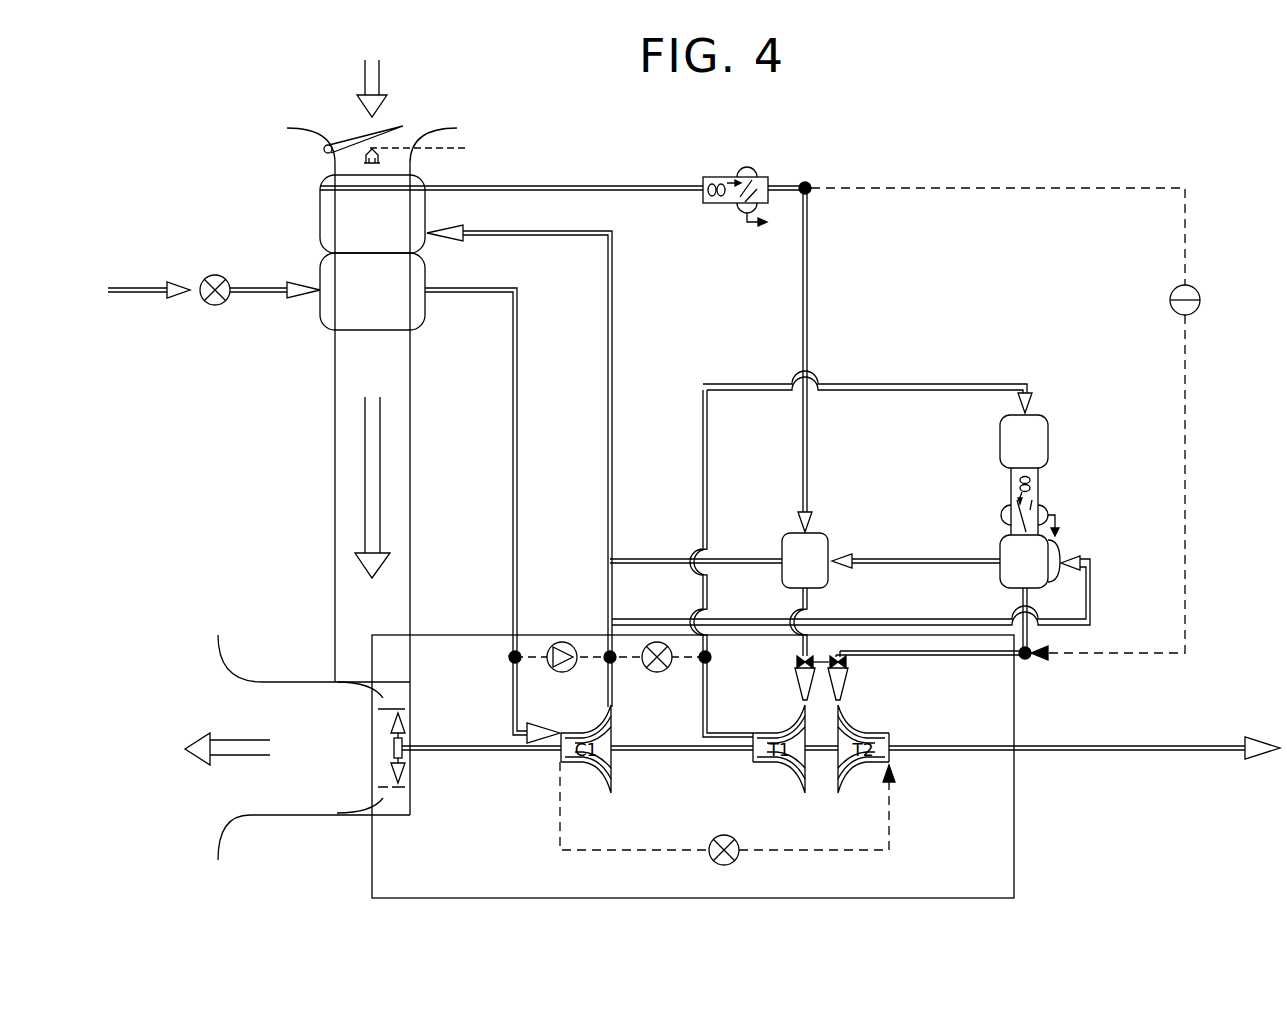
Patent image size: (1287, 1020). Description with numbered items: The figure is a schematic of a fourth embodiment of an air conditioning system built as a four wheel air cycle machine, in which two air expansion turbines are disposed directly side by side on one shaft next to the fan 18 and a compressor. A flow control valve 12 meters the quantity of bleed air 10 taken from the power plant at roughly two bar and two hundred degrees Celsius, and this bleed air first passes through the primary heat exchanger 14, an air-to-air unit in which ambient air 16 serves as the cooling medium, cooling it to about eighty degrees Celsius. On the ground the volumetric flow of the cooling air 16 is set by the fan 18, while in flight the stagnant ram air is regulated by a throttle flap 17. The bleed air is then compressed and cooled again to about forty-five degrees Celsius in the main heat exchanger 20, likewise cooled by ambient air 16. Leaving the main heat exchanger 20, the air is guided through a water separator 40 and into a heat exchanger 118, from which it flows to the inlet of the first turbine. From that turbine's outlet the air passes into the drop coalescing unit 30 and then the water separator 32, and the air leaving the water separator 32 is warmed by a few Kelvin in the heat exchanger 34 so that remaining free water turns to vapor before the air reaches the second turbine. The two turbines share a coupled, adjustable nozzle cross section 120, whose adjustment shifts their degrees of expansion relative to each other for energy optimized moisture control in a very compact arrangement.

The bleed air 10 is at (209, 278).
The flow control valve 12 is at (213, 305).
The primary heat exchanger 14 is at (328, 315).
The ambient air 16 is at (382, 75).
The throttle flap 17 is at (338, 147).
The fan 18 is at (392, 758).
The main heat exchanger 20 is at (325, 212).
The drop coalescing unit 30 is at (1037, 438).
The water separator 32 is at (1040, 487).
The heat exchanger 34 is at (1040, 555).
The water separator 40 is at (718, 177).
The heat exchanger 118 is at (813, 547).
The coupled adjustable nozzle cross section 120 is at (797, 661).